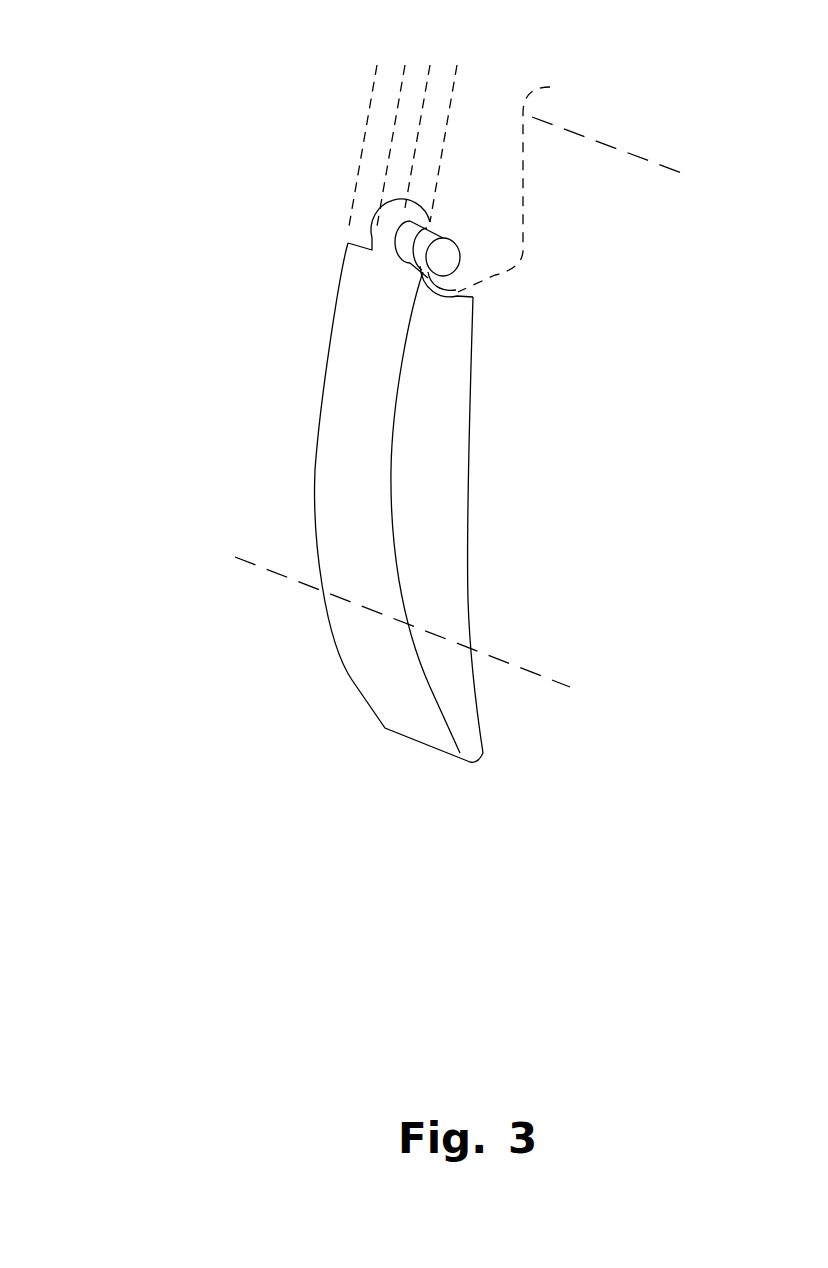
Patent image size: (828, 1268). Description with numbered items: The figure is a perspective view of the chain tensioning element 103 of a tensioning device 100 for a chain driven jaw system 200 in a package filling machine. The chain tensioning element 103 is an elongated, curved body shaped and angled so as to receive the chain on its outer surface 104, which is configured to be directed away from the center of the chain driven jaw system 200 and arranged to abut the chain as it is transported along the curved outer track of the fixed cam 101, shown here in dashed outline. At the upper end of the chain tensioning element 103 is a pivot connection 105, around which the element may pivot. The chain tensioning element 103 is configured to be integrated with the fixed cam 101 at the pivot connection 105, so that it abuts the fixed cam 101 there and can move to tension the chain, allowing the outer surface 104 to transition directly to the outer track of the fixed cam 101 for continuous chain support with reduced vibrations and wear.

The tensioning device 100 is at (188, 40).
The chain driven jaw system 200 is at (374, 400).
The fixed cam 101 is at (523, 195).
The chain tensioning element 103 is at (315, 472).
The outer surface 104 is at (343, 418).
The pivot connection 105 is at (445, 262).